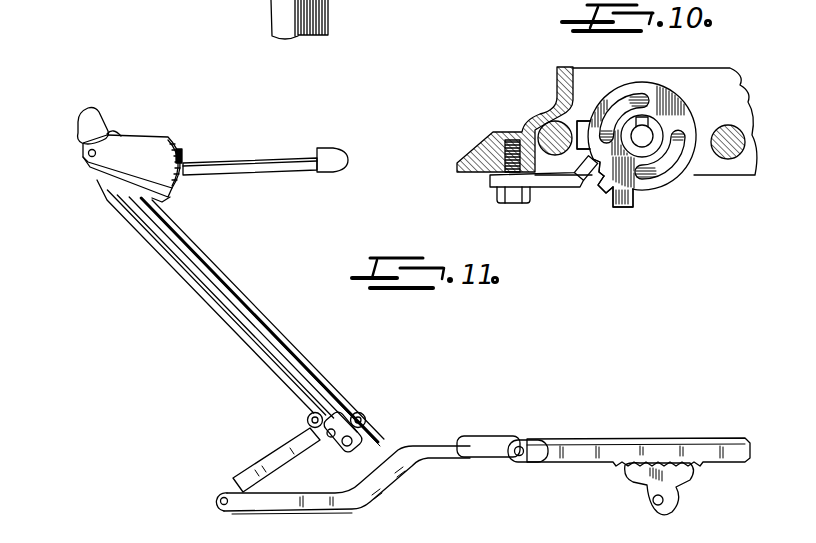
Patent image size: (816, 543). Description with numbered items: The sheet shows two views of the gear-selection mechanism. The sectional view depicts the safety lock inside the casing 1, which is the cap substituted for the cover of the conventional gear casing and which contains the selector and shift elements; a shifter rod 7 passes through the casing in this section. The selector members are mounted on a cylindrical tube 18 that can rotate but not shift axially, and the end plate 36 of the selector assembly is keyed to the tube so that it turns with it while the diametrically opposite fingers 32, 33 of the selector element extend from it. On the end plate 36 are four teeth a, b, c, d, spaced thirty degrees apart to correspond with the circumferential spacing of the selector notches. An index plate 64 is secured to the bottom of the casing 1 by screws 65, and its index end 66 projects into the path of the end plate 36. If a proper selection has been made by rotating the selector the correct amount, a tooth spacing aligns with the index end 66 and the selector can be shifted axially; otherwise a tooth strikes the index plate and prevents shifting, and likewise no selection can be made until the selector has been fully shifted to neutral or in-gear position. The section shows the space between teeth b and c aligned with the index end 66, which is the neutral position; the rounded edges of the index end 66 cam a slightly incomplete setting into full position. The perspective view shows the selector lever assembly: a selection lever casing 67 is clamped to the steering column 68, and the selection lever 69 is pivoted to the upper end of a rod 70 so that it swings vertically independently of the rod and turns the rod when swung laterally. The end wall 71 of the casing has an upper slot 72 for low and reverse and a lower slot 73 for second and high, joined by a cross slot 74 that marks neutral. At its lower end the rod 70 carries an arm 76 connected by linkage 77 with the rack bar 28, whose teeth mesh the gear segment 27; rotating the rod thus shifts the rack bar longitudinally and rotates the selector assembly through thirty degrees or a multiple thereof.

In FIG. 10, the casing 1 is at (558, 72).
In FIG. 10, the rod 7 is at (550, 130).
In FIG. 10, the cylindrical tube 18 is at (656, 128).
In FIG. 10, the finger 32 is at (633, 98).
In FIG. 10, the finger 33 is at (673, 173).
In FIG. 10, the end plate 36 is at (662, 100).
In FIG. 10, the index plate 64 is at (490, 178).
In FIG. 10, the screws 65 is at (513, 195).
In FIG. 10, the index end 66 is at (578, 184).
In FIG. 10, the tooth a is at (622, 204).
In FIG. 10, the tooth b is at (598, 186).
In FIG. 10, the tooth c is at (572, 161).
In FIG. 10, the tooth d is at (577, 115).
In FIG. 11, the gear segment 27 is at (672, 483).
In FIG. 11, the rack bar 28 is at (588, 440).
In FIG. 11, the selection lever casing 67 is at (143, 144).
In FIG. 11, the steering column 68 is at (205, 256).
In FIG. 11, the selection lever 69 is at (306, 140).
In FIG. 11, the rod 70 is at (207, 293).
In FIG. 11, the end wall 71 is at (170, 197).
In FIG. 11, the upper slot 72 is at (179, 148).
In FIG. 11, the lower slot 73 is at (185, 158).
In FIG. 11, the cross slot 74 is at (172, 182).
In FIG. 11, the arm 76 is at (260, 466).
In FIG. 11, the linkage 77 is at (410, 447).